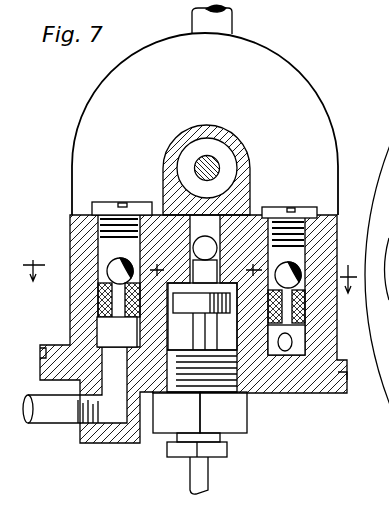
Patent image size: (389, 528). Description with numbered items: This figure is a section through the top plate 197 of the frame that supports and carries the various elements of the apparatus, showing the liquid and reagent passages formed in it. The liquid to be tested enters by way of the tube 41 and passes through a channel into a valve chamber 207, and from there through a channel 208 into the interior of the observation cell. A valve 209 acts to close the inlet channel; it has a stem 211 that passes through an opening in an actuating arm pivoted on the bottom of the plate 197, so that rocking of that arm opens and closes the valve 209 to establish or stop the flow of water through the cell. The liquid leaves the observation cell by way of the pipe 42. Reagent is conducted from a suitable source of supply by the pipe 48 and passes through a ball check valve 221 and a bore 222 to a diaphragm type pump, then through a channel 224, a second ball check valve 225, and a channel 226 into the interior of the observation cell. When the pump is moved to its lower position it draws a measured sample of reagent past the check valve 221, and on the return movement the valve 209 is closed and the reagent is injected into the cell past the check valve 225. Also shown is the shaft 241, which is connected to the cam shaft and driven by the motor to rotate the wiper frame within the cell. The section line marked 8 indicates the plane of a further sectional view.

The section line 8- 8 is at (188, 269).
The tube 41 is at (388, 79).
The pipe 42 is at (222, 23).
The pipe 48 is at (50, 420).
The top plate 197 is at (319, 384).
The valve chamber 207 is at (183, 338).
The channel 208 is at (195, 237).
The valve 209 is at (222, 350).
The stem 211 is at (191, 478).
The ball check valve 221 is at (94, 242).
The bore 222 is at (106, 270).
The channel 224 is at (292, 355).
The ball check valve 225 is at (318, 292).
The channel 226 is at (281, 262).
The shaft 241 is at (232, 153).